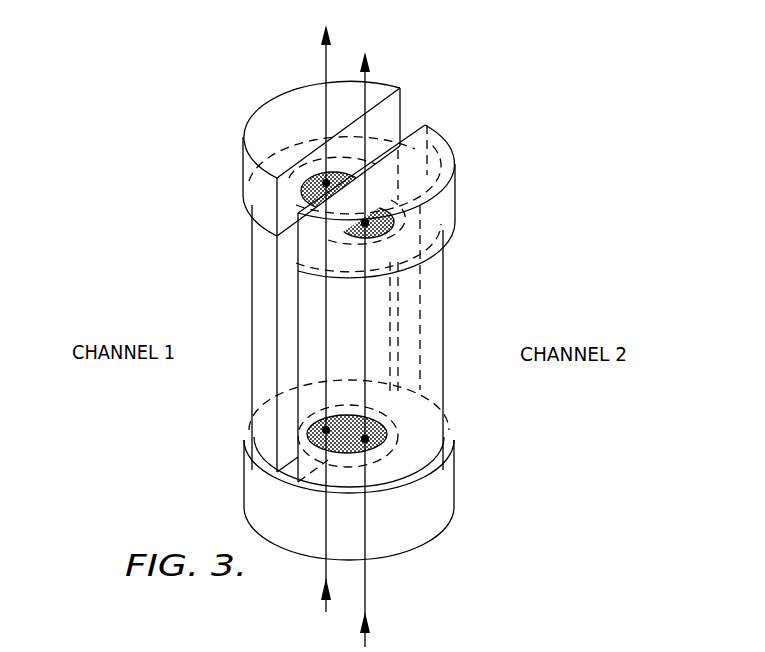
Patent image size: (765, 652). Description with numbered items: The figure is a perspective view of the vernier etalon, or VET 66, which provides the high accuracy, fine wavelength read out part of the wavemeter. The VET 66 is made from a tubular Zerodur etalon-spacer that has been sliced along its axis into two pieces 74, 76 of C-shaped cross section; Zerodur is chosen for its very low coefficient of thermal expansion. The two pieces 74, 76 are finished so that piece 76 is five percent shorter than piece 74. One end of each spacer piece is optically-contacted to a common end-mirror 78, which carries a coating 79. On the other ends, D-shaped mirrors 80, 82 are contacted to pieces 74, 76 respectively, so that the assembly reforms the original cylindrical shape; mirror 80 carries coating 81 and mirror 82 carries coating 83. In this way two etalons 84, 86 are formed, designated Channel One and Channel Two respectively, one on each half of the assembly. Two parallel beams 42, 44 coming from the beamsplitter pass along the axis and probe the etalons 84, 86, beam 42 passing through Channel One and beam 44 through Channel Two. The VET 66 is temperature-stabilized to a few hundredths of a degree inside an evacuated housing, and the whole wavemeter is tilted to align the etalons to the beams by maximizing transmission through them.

The vernier etalon (VET) 66 is at (446, 50).
The C-shape cross sectional piece 74 is at (252, 378).
The C-shape cross sectional piece 76 is at (445, 337).
The common end-mirror 78 is at (265, 498).
The coating 79 is at (373, 423).
The D-shaped mirror 80 is at (243, 163).
The coating 81 is at (338, 165).
The D-shaped mirror 82 is at (456, 190).
The coating 83 is at (385, 200).
The etalon (Channel 1) 84 is at (220, 252).
The etalon (Channel 2) 86 is at (460, 291).
The parallel beam 42 is at (326, 573).
The parallel beam 44 is at (368, 583).